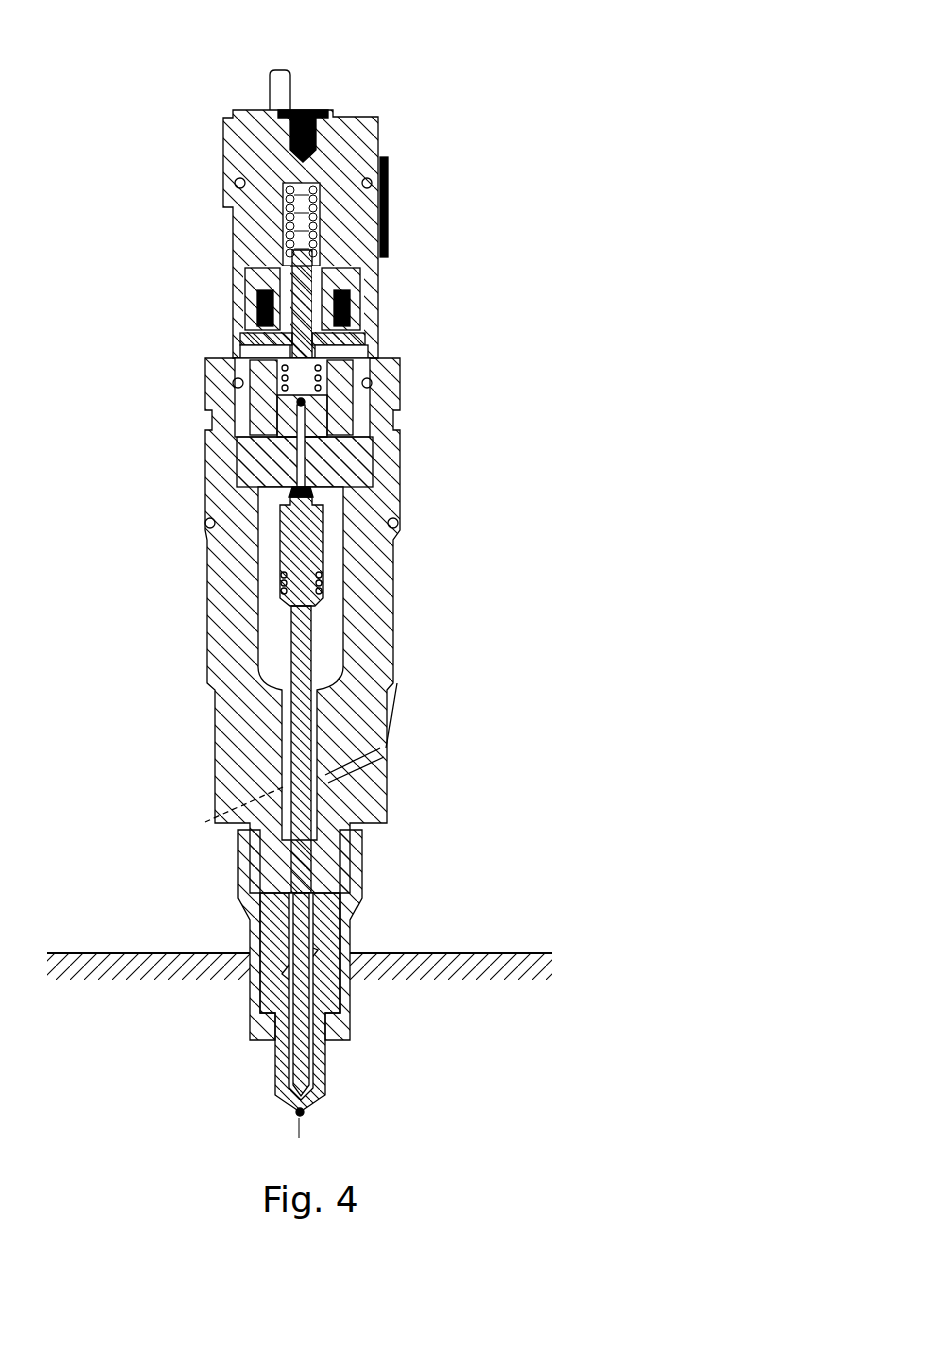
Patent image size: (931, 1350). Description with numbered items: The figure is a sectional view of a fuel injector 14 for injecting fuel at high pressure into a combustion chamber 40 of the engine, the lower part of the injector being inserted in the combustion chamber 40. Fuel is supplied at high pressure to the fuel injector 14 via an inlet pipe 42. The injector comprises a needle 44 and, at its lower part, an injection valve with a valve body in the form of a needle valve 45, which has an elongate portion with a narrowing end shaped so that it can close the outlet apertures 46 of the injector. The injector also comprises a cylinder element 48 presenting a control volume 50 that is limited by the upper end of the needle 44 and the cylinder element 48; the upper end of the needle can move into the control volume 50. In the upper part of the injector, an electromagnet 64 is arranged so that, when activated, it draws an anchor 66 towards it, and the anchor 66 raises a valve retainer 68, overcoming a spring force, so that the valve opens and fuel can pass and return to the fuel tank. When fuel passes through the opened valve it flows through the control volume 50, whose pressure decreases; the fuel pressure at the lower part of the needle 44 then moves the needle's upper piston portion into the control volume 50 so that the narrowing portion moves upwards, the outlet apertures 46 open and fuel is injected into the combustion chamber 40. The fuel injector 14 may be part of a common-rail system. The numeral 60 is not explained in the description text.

The fuel injector 14 is at (490, 80).
The combustion chamber 40 is at (398, 953).
The inlet pipe 42 is at (340, 768).
The needle 44 is at (322, 1022).
The needle valve 45 is at (308, 1105).
The outlet apertures 46 is at (288, 1113).
The cylinder element 48 is at (305, 495).
The control volume 50 is at (315, 486).
The actuator housing 60 is at (371, 384).
The electromagnet 64 is at (363, 286).
The anchor 66 is at (355, 313).
The valve retainer 68 is at (317, 266).